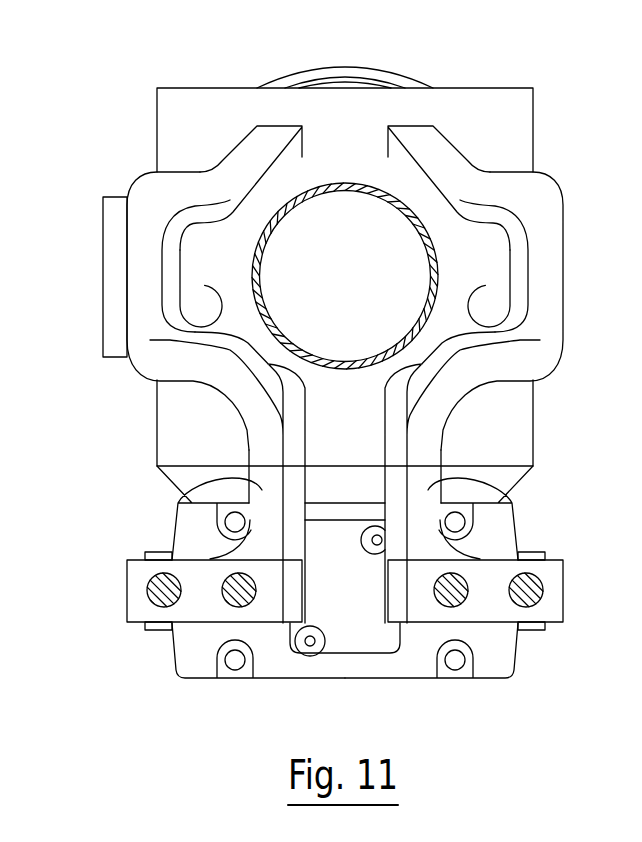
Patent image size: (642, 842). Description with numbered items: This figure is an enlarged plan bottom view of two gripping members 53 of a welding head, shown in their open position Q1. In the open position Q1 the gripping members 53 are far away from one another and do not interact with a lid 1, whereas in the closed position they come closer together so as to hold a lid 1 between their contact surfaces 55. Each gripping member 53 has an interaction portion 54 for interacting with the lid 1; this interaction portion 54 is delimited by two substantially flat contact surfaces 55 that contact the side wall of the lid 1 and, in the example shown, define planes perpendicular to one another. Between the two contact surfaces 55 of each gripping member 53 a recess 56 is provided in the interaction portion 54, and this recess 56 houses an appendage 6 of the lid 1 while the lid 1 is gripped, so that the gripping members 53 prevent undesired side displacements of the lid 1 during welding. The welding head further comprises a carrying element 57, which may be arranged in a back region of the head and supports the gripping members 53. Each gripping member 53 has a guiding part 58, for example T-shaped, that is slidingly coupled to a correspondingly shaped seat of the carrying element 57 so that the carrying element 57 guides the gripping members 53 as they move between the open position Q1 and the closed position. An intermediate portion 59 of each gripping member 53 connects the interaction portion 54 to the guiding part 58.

The lid 1 is at (355, 183).
The appendage 6 is at (635, 258).
The gripping member 53 is at (158, 205).
The interaction portion 54 is at (118, 386).
The contact surfaces 55 is at (302, 157).
The recess 56 is at (203, 287).
The carrying element 57 is at (273, 680).
The guiding part 58 is at (163, 626).
The intermediate portion 59 is at (190, 500).
The open position Q1 is at (470, 118).